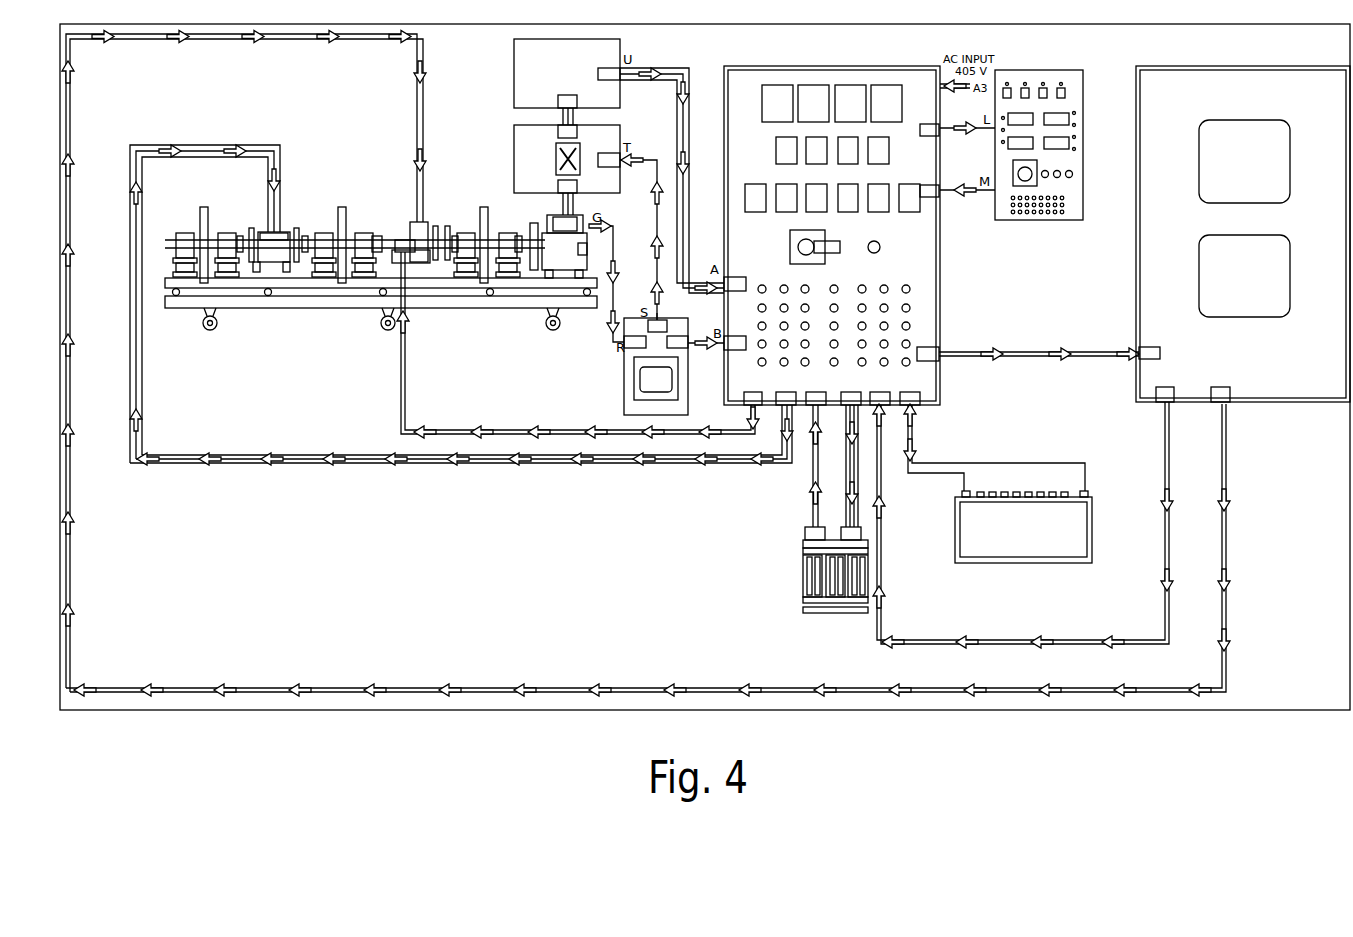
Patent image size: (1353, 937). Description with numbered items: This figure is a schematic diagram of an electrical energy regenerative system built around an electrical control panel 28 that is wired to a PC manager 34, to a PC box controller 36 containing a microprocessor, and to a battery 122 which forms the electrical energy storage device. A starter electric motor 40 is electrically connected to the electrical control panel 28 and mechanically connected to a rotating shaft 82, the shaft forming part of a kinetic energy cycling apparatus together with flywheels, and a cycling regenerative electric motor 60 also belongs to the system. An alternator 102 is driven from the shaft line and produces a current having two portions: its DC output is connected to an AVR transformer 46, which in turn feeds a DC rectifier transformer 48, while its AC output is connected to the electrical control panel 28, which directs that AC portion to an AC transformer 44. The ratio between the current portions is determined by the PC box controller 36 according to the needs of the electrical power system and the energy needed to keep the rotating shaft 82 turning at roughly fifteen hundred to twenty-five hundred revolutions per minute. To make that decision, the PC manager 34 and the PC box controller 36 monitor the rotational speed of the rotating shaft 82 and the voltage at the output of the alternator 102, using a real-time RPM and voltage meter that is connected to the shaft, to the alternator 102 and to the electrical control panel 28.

The DC rectifier transformer 48 is at (535, 55).
The AVR transformer 46 is at (526, 160).
The starter electric motor 40 is at (414, 247).
The rotating shaft 82 is at (170, 240).
The cycling (regenerative) electric motor 60 is at (277, 246).
The alternator 102 is at (557, 255).
The electrical control panel 28 is at (920, 322).
The PC manager 34 is at (1056, 91).
The PC box controller 36 is at (1188, 110).
The AC transformer 44 is at (813, 576).
The battery 122 is at (1062, 538).